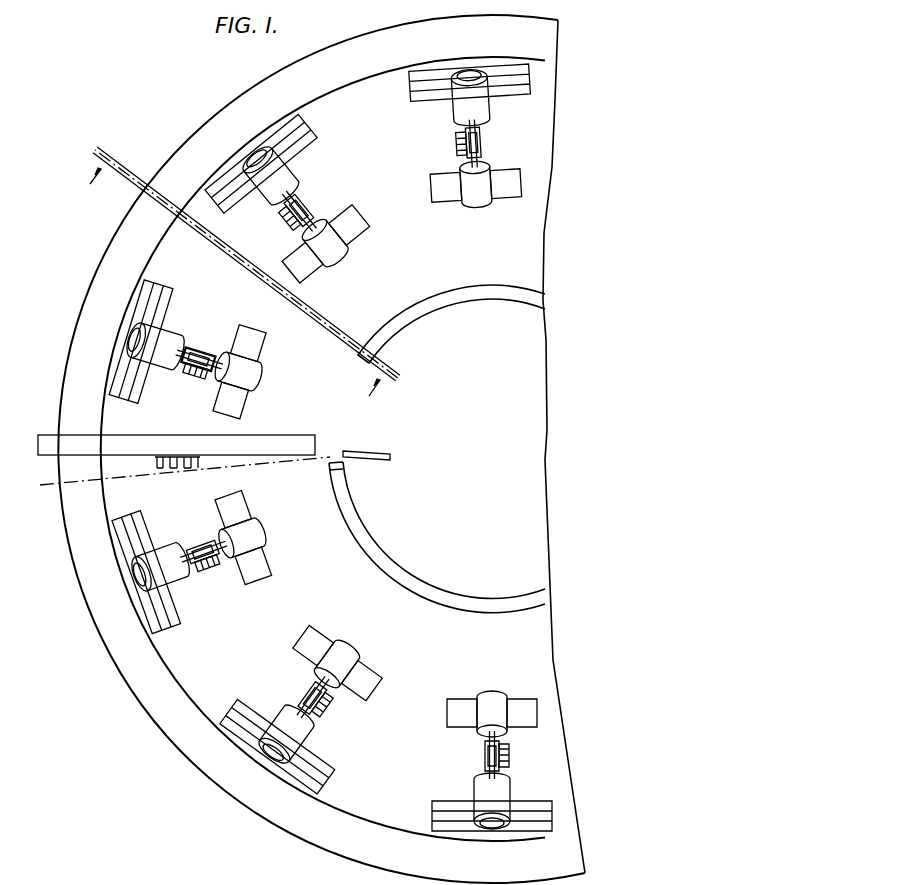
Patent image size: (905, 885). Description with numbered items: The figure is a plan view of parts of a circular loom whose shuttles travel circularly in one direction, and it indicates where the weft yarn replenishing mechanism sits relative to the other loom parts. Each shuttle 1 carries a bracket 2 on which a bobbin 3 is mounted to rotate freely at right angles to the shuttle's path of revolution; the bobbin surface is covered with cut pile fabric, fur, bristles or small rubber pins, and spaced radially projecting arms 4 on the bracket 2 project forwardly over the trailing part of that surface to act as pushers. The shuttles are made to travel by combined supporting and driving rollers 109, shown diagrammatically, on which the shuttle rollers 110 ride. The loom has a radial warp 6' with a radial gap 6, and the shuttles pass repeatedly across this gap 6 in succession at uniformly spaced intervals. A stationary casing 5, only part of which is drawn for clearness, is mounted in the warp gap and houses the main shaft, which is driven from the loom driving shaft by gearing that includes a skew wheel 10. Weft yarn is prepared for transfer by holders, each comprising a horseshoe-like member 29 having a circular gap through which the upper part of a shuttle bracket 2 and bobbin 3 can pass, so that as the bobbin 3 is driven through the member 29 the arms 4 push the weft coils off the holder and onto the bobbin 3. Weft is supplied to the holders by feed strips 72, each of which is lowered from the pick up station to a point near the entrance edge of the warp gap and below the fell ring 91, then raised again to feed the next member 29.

The shuttle 1 is at (208, 364).
The bracket 2 is at (186, 356).
The bobbin 3 is at (190, 383).
The radially projecting arms 4 is at (180, 368).
The stationary casing 5 is at (78, 446).
The radial gap 6 is at (185, 391).
The radial warp 6' is at (246, 326).
The skew wheel 10 is at (238, 276).
The horseshoe-like member 29 is at (200, 457).
The feed strip 72 is at (372, 446).
The fell ring 91 is at (357, 547).
The combined supporting and driving rollers 109 is at (140, 284).
The shuttle rollers 110 is at (160, 340).